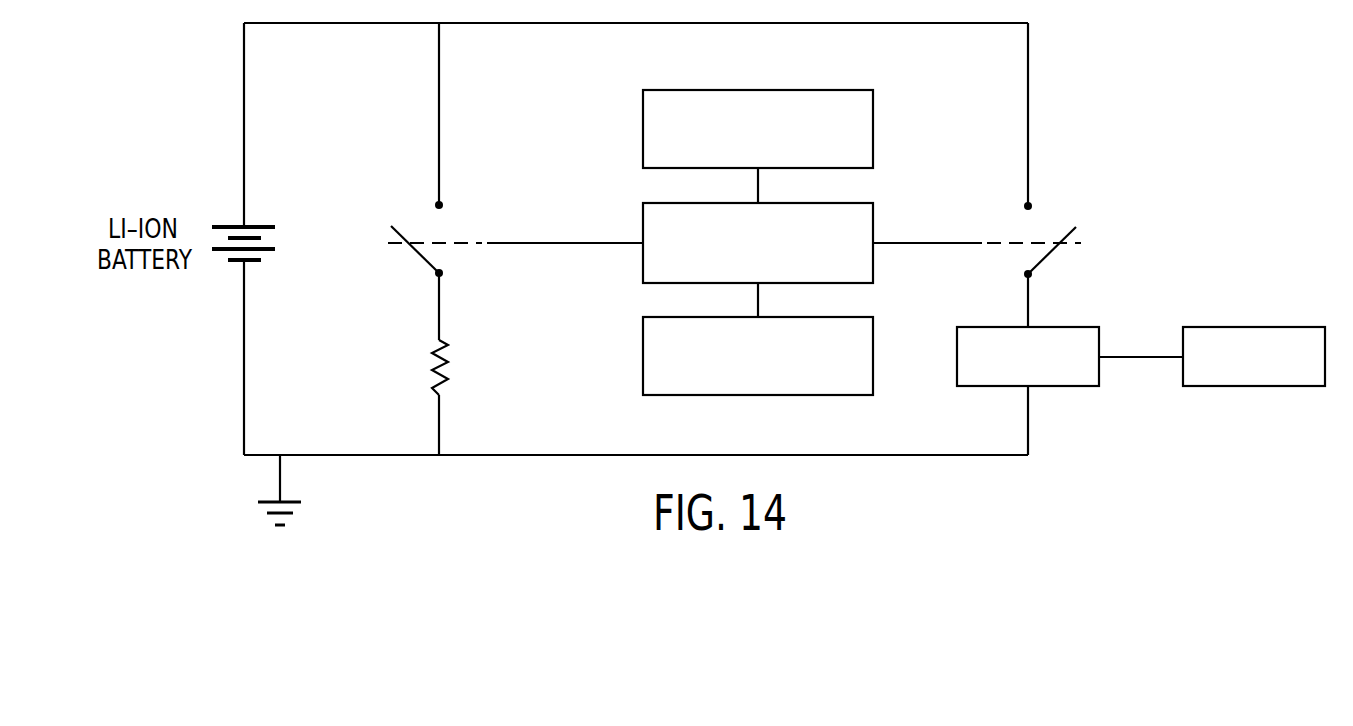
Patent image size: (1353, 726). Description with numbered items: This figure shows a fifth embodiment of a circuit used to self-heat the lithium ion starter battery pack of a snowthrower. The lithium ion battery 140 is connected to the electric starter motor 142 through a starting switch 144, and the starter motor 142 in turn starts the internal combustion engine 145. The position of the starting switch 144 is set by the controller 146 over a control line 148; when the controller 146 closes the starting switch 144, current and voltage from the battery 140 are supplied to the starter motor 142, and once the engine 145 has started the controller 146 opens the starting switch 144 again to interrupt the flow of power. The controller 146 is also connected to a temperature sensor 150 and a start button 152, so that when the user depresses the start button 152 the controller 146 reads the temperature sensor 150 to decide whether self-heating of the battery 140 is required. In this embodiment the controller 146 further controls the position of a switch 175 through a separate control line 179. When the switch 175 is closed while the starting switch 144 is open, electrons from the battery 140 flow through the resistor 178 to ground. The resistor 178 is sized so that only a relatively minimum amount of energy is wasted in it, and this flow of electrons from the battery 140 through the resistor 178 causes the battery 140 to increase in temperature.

The lithium ion battery 140 is at (233, 226).
The electric starter motor 142 is at (1058, 387).
The starting switch 144 is at (1040, 262).
The internal combustion engine 145 is at (1255, 327).
The controller 146 is at (873, 229).
The control line 148 is at (898, 243).
The temperature sensor 150 is at (873, 357).
The start button 152 is at (873, 128).
The switch 175 is at (417, 252).
The resistor 178 is at (445, 350).
The control line 179 is at (515, 243).